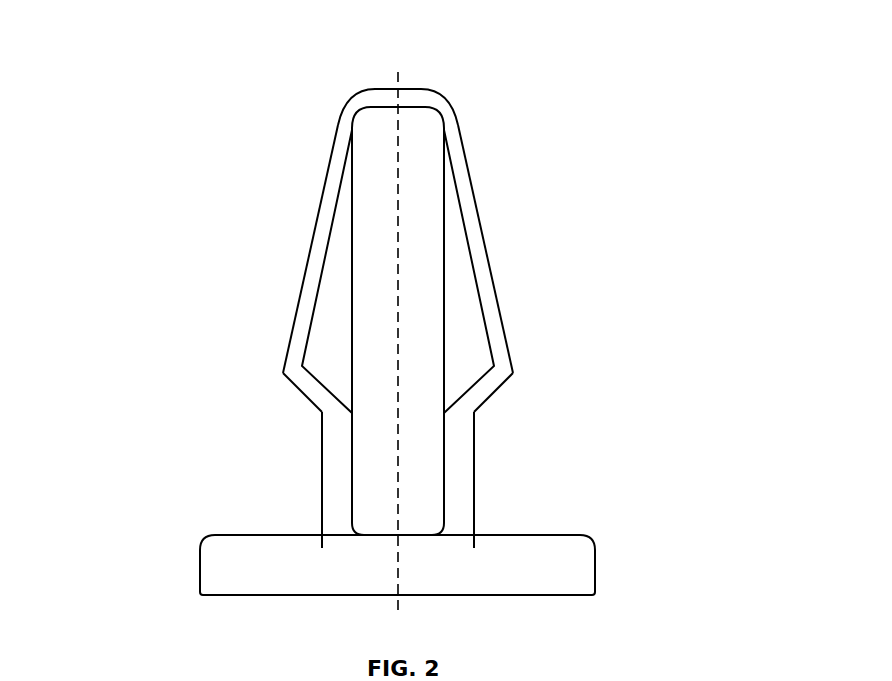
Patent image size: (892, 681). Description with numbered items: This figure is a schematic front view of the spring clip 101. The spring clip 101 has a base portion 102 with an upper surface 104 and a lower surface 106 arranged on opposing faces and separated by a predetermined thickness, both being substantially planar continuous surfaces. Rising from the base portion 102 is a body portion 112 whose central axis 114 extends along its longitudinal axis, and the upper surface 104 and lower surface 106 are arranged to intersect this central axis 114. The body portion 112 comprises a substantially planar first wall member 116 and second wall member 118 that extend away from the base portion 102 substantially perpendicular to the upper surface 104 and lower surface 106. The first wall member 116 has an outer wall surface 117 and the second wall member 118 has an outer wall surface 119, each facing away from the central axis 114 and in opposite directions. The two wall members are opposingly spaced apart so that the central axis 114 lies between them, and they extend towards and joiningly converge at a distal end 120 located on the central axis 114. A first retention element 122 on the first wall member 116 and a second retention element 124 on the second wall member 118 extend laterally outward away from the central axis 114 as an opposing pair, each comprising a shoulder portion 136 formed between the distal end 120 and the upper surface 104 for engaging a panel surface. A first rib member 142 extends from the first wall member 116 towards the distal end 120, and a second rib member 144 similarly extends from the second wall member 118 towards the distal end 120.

The spring clip 101 is at (222, 92).
The base portion 102 is at (228, 557).
The upper surface 104 is at (235, 537).
The lower surface 106 is at (250, 598).
The body portion 112 is at (250, 300).
The central axis 114 is at (400, 143).
The first wall member 116 is at (330, 458).
The outer wall surface 117 is at (322, 439).
The second wall member 118 is at (464, 452).
The outer wall surface 119 is at (477, 422).
The distal end 120 is at (403, 98).
The first retention element 122 is at (307, 317).
The second retention element 124 is at (490, 313).
The shoulder portion 136 is at (283, 373).
The first rib member 142 is at (340, 293).
The second rib member 144 is at (455, 288).